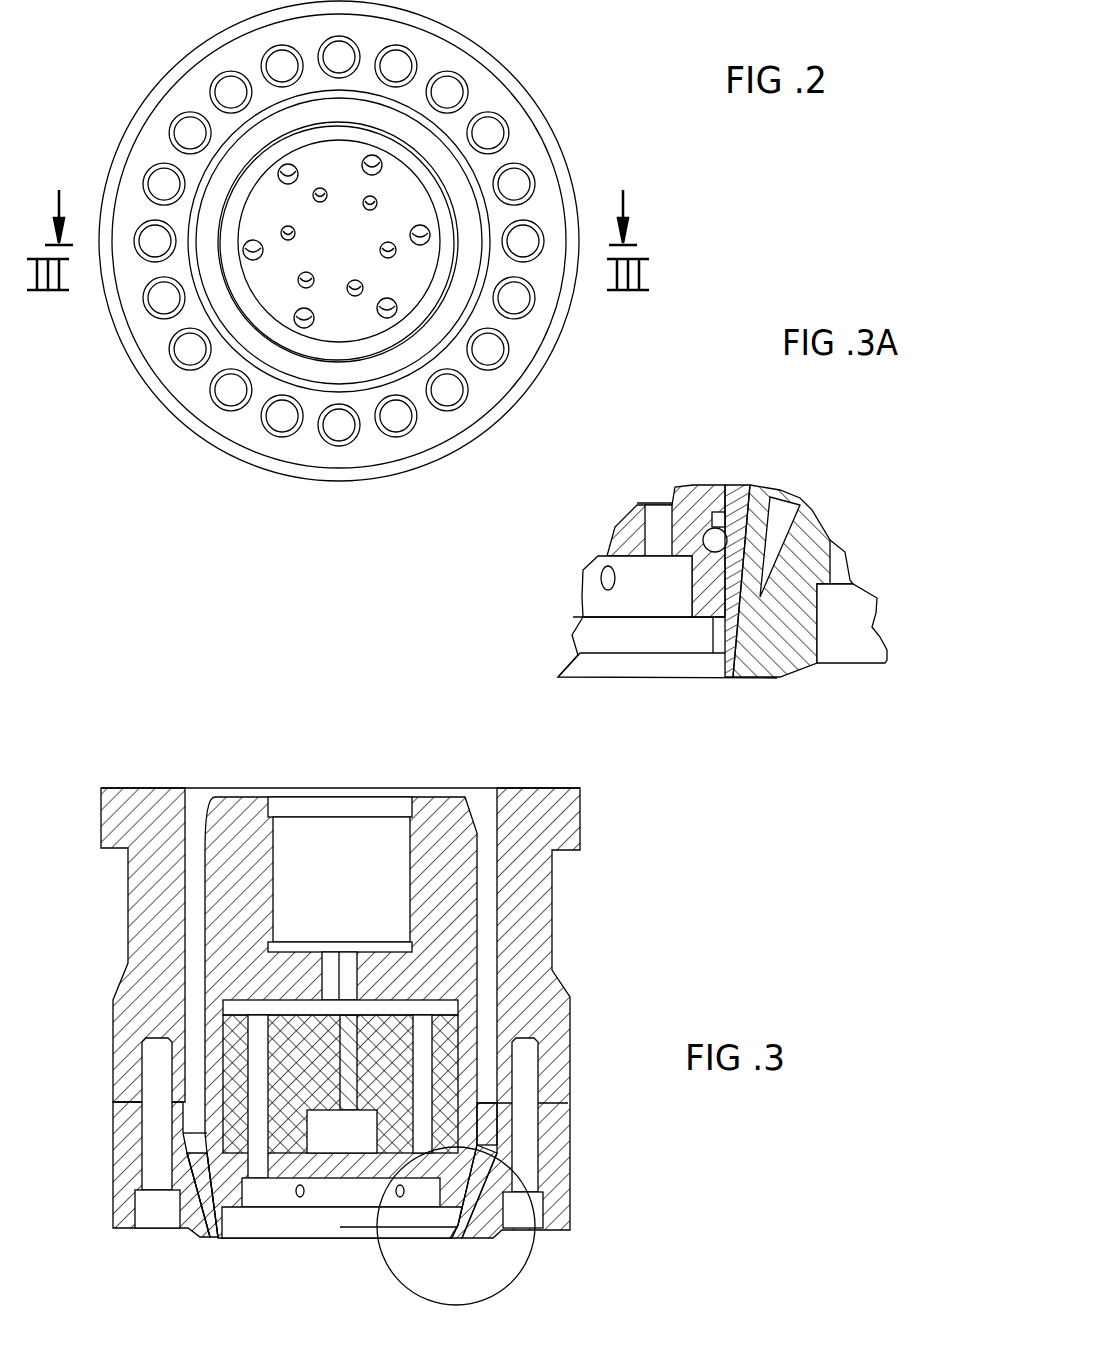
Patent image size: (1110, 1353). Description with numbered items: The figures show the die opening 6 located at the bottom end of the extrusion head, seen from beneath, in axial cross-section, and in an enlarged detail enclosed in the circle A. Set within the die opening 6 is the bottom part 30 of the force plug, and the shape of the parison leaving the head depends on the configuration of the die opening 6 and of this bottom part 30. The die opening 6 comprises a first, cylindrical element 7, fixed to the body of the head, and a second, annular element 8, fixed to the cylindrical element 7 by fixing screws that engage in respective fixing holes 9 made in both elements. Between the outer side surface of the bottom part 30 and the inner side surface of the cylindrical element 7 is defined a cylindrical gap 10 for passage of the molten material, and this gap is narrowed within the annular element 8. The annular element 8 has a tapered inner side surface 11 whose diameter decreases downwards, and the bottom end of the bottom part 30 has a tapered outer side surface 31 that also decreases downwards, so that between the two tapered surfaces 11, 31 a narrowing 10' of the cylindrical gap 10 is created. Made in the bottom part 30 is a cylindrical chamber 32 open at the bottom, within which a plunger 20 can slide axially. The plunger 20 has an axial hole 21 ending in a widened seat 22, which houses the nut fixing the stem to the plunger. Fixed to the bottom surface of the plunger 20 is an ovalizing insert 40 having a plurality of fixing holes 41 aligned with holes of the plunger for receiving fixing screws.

In FIG. 2, the die opening 6 is at (112, 369).
In FIG. 3, the die opening 6 is at (95, 1030).
In FIG. 3, the cylindrical element 7 is at (148, 928).
In FIG. 2, the annular element 8 is at (242, 430).
In FIG. 3A, the annular element 8 is at (790, 627).
In FIG. 3, the annular element 8 is at (125, 1160).
In FIG. 2, the fixing holes 9 is at (186, 353).
In FIG. 3, the fixing holes 9 is at (155, 1205).
In FIG. 3, the cylindrical gap 10 is at (555, 1013).
In FIG. 3A, the narrowing of the cylindrical gap 10' is at (793, 626).
In FIG. 3, the narrowing of the cylindrical gap 10' is at (576, 1133).
In FIG. 3A, the tapered inner side surface 11 is at (762, 572).
In FIG. 3, the tapered inner side surface 11 is at (212, 1188).
In FIG. 3, the plunger 20 is at (400, 1075).
In FIG. 3, the axial hole 21 is at (345, 1045).
In FIG. 3, the widened seat 22 is at (362, 1130).
In FIG. 3A, the bottom part of the force plug 30 is at (747, 522).
In FIG. 3, the bottom part of the force plug 30 is at (450, 870).
In FIG. 3A, the tapered outer side surface 31 is at (760, 550).
In FIG. 3, the tapered outer side surface 31 is at (222, 1212).
In FIG. 3A, the cylindrical chamber 32 is at (590, 633).
In FIG. 3, the cylindrical chamber 32 is at (278, 1008).
In FIG. 2, the ovalizing insert 40 is at (402, 203).
In FIG. 3A, the ovalizing insert 40 is at (707, 593).
In FIG. 3, the ovalizing insert 40 is at (357, 1190).
In FIG. 2, the fixing holes 41 is at (387, 312).
In FIG. 3A, the fixing holes 41 is at (650, 526).
In FIG. 3, the fixing holes 41 is at (265, 1180).
In FIG. 3, the circle A is at (500, 1290).